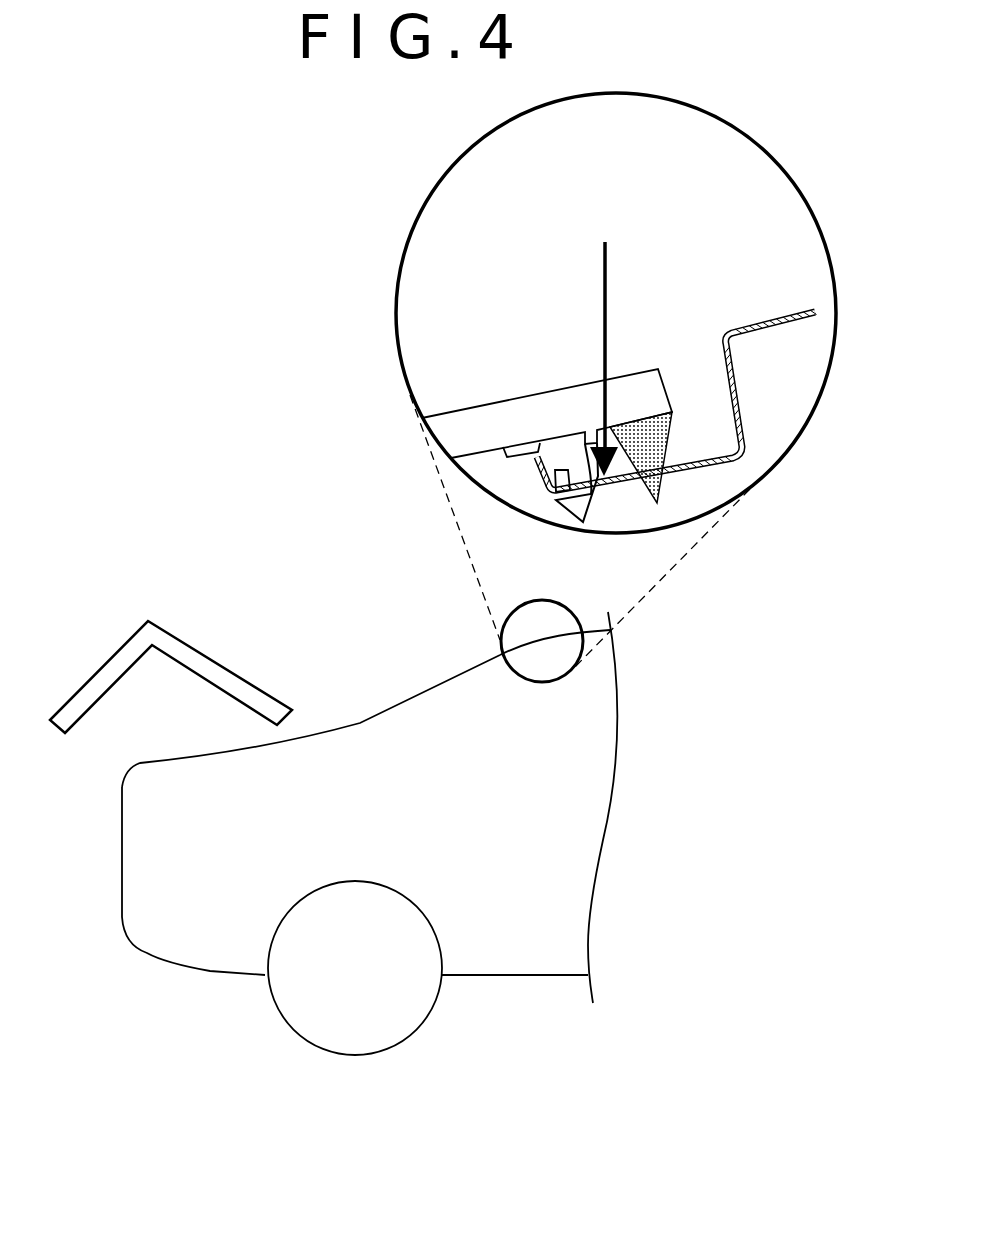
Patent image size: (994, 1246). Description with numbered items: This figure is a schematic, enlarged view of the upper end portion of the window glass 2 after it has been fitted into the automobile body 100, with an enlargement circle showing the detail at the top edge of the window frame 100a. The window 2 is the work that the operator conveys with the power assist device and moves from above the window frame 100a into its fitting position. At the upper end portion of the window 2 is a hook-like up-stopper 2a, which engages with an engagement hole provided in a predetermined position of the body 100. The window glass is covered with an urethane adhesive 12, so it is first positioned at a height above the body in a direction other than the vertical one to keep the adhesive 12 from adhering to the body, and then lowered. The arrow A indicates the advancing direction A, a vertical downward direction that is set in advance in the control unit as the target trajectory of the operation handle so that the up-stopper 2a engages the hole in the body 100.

The window glass 2 is at (556, 388).
The hook-like up-stopper 2a is at (558, 448).
The urethane adhesive 12 is at (672, 432).
The automobile body 100 is at (757, 318).
The window frame 100a is at (393, 708).
The advancing direction A is at (604, 343).